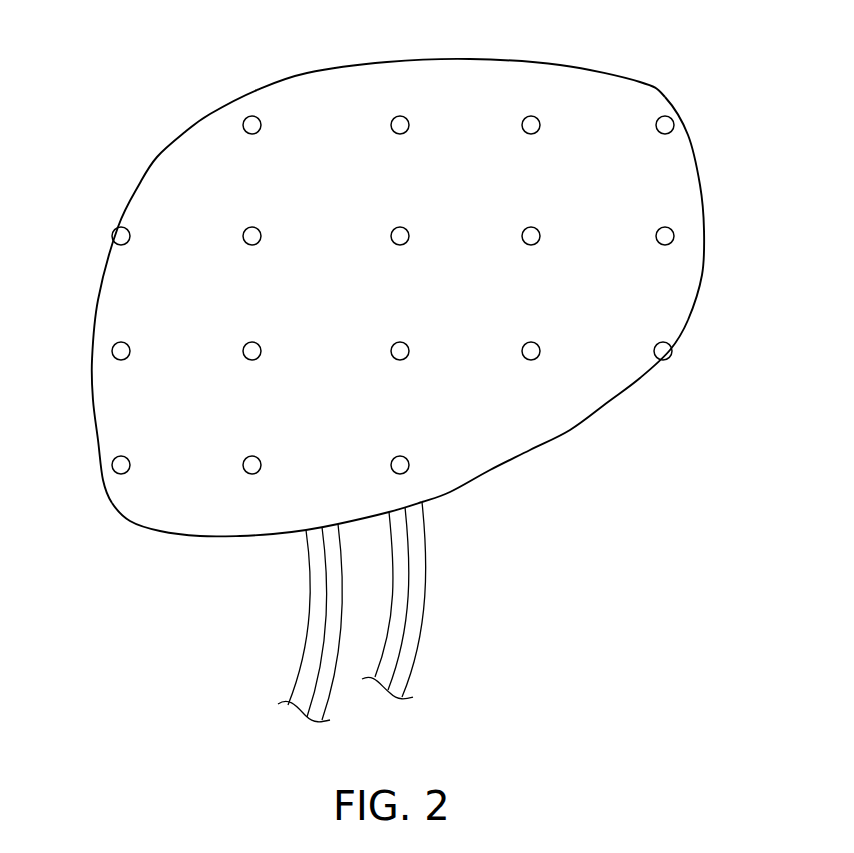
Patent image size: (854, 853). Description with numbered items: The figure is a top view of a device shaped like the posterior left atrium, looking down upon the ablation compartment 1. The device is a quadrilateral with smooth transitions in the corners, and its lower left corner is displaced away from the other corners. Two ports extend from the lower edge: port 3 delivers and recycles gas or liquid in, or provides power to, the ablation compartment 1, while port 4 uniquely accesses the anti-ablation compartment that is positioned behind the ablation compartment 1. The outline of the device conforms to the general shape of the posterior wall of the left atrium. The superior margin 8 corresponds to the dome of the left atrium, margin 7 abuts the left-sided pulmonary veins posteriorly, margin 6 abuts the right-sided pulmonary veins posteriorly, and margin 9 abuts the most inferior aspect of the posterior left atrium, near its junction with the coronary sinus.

The ablation compartment 1 is at (390, 276).
The port 3 is at (309, 590).
The port 4 is at (425, 577).
The margin 6 is at (92, 364).
The margin 7 is at (698, 200).
The margin 8 is at (388, 60).
The margin 9 is at (543, 445).